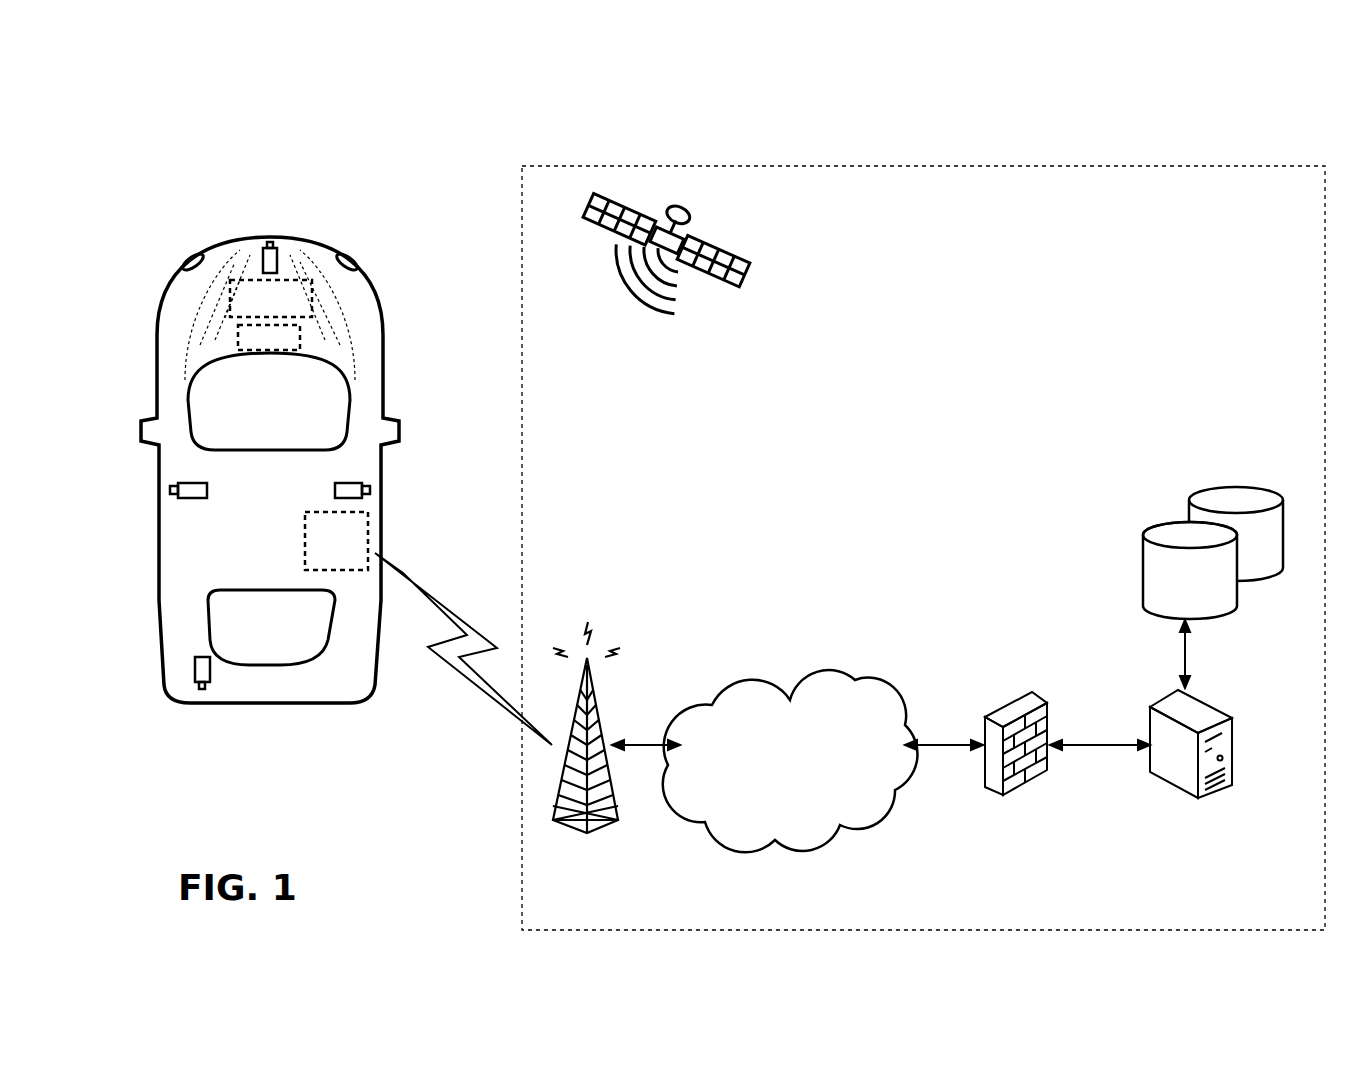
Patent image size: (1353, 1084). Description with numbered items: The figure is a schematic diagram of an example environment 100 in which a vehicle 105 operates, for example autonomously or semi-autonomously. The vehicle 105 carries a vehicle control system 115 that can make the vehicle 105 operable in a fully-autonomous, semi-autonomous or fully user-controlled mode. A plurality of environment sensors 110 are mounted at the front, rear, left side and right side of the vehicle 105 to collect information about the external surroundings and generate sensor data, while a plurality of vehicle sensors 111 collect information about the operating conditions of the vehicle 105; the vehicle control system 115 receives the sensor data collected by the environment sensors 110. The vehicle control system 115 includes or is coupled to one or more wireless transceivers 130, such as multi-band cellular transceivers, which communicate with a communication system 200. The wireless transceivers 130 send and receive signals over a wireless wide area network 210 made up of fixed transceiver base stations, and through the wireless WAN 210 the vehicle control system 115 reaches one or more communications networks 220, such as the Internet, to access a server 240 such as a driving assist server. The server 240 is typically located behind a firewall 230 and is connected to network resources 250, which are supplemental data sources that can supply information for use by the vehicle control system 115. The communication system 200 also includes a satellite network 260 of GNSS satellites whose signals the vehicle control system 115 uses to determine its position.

The environment 100 is at (225, 115).
The vehicle 105 is at (357, 326).
The environment sensors 110 is at (278, 262).
The vehicle sensors 111 is at (269, 338).
The vehicle control system 115 is at (271, 298).
The wireless transceivers 130 is at (336, 541).
The communication system 200 is at (922, 166).
The wireless wide area network 210 is at (595, 757).
The communications networks 220 is at (790, 761).
The firewall 230 is at (1014, 767).
The server 240 is at (1191, 772).
The network resources 250 is at (1111, 553).
The satellite network 260 is at (666, 268).